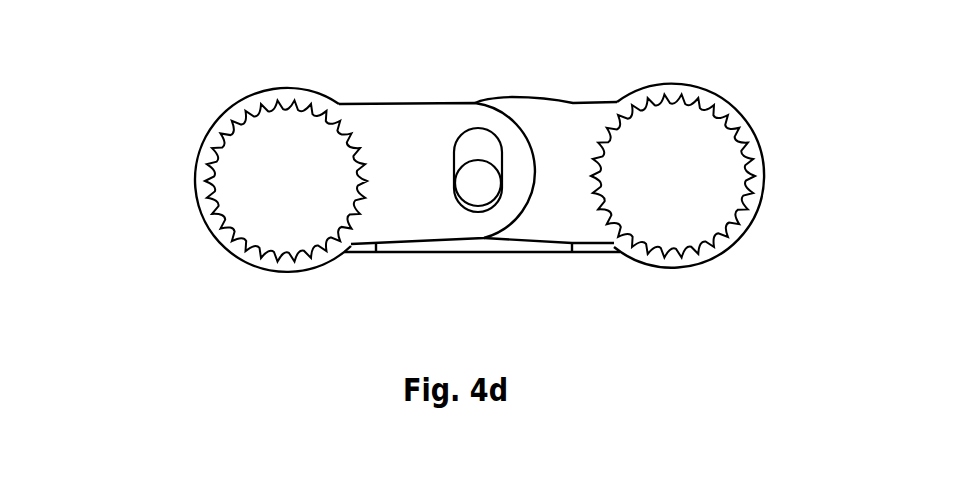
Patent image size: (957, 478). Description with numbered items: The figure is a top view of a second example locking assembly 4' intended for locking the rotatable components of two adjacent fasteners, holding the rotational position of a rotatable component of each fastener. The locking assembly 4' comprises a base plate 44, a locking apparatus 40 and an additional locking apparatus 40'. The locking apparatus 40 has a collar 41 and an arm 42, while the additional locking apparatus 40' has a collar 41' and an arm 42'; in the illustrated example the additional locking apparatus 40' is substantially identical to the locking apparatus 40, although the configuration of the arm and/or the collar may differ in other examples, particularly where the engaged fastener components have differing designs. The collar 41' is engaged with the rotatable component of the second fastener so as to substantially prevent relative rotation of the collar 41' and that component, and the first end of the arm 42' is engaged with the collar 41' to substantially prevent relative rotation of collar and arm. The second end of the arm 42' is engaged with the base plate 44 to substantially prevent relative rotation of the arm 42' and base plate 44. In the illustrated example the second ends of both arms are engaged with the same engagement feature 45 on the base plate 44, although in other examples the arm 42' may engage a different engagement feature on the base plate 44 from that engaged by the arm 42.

The locking assembly 4' is at (439, 196).
The locking apparatus 40 is at (689, 218).
The additional locking apparatus 40' is at (273, 225).
The collar 41 is at (705, 184).
The collar 41' is at (267, 215).
The arm 42 is at (546, 140).
The arm 42' is at (437, 137).
The base plate 44 is at (487, 243).
The engagement feature 45 is at (477, 170).